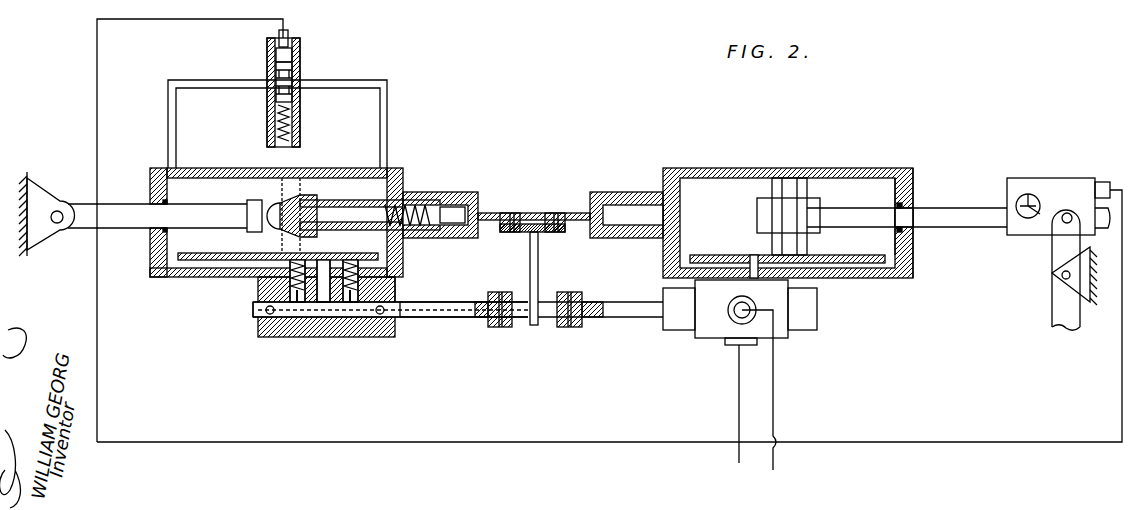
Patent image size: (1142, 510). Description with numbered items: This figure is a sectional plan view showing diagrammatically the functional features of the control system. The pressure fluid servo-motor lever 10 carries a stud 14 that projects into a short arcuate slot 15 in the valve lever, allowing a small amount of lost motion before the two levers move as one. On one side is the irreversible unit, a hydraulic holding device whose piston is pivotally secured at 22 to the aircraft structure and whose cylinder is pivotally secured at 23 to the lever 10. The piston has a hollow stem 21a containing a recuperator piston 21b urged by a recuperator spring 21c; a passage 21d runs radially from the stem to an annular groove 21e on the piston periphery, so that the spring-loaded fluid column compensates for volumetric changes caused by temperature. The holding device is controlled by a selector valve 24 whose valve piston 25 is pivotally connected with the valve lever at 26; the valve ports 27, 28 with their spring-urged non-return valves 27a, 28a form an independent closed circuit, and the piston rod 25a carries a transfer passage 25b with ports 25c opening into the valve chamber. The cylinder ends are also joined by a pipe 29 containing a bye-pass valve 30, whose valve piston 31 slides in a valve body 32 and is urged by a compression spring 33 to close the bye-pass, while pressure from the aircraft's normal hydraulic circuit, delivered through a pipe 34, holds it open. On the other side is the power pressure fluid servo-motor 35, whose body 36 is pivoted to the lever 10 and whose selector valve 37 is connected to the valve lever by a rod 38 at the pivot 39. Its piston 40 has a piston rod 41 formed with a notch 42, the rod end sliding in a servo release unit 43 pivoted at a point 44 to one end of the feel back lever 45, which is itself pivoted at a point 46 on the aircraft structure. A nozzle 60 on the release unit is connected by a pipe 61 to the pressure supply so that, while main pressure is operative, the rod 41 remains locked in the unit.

The pressure fluid servo-motor lever 10 is at (540, 234).
The stud 14 is at (530, 258).
The arcuate slot 15 is at (534, 328).
The hollow stem 21a is at (412, 205).
The recuperator piston 21b is at (378, 200).
The recuperator spring 21c is at (428, 238).
The passage 21d is at (312, 178).
The annular groove 21e is at (262, 268).
The pivot 22 is at (57, 224).
The pivot 23 is at (512, 212).
The selector valve 24 is at (257, 290).
The valve piston 25 is at (328, 320).
The piston rod 25a is at (440, 320).
The transfer passage 25b is at (396, 292).
The ports 25c is at (266, 320).
The pivot 26 is at (500, 330).
The valve port 27 is at (299, 312).
The spring-urged non-return valve 27a is at (333, 240).
The valve port 28 is at (349, 312).
The spring-urged non-return valve 28a is at (372, 240).
The pipe 29 is at (197, 80).
The bye-pass valve 30 is at (265, 91).
The valve piston 31 is at (275, 88).
The valve body 32 is at (293, 105).
The compression spring 33 is at (268, 137).
The pipe 34 is at (97, 68).
The power pressure fluid servo-motor 35 is at (848, 282).
The power pressure fluid servo-motor body 36 is at (913, 255).
The selector valve 37 is at (710, 318).
The rod 38 is at (625, 312).
The pivot 39 is at (570, 330).
The power pressure fluid servo-motor piston 40 is at (777, 183).
The piston rod 41 is at (948, 218).
The notch 42 is at (1028, 200).
The servo release unit 43 is at (1015, 190).
The pivot point 44 is at (1067, 212).
The feel back lever 45 is at (1057, 250).
The pivot point 46 is at (1062, 276).
The nozzle 60 is at (1105, 185).
The pipe 61 is at (1122, 376).